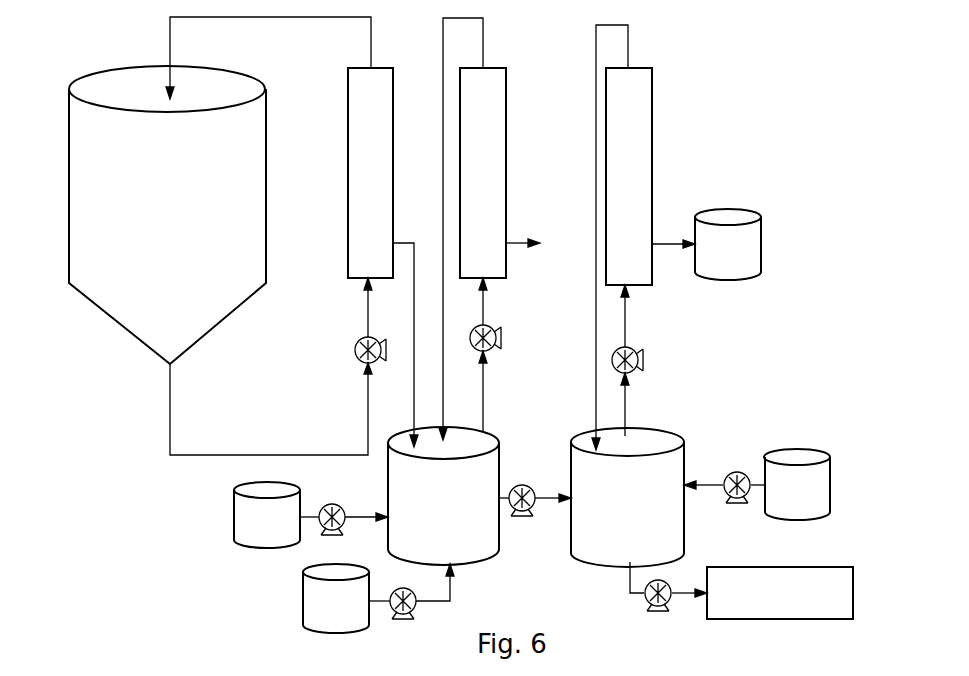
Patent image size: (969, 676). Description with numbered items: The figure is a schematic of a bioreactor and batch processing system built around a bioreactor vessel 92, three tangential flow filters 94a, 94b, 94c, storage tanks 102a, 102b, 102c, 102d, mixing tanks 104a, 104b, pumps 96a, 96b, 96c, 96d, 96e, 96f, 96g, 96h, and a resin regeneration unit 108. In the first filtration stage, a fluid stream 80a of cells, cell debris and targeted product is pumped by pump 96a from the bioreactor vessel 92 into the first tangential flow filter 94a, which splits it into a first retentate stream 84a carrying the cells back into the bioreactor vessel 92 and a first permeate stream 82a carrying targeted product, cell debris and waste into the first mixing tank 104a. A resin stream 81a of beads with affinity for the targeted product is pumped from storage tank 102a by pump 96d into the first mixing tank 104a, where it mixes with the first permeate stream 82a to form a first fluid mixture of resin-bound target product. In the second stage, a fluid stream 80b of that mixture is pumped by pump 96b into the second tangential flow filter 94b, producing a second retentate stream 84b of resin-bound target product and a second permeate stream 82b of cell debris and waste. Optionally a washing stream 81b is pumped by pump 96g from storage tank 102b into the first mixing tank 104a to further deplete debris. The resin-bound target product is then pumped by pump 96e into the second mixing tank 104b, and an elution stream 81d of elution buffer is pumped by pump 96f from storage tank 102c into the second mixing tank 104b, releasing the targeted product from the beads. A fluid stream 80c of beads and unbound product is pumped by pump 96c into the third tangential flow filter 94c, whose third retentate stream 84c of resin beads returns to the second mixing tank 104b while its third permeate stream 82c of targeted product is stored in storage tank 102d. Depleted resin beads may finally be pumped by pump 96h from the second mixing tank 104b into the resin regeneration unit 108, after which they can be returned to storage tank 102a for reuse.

The bioreactor vessel 92 is at (167, 215).
The first tangential flow filter 94a is at (370, 173).
The second tangential flow filter 94b is at (483, 173).
The third tangential flow filter 94c is at (629, 176).
The first retentate stream 84a is at (371, 40).
The second retentate stream 84b is at (483, 40).
The third retentate stream 84c is at (628, 40).
The fluid stream 80a is at (369, 312).
The fluid stream 80b is at (484, 310).
The fluid stream 80c is at (626, 320).
The first permeate stream 82a is at (416, 381).
The second permeate stream 82b is at (516, 242).
The third permeate stream 82c is at (664, 242).
The pump 96a is at (355, 350).
The pump 96b is at (502, 338).
The pump 96c is at (641, 360).
The pump 96d is at (336, 504).
The pump 96e is at (522, 478).
The pump 96f is at (737, 467).
The pump 96g is at (405, 587).
The pump 96h is at (652, 582).
The storage tank 102a is at (267, 515).
The storage tank 102b is at (336, 598).
The storage tank 102c is at (797, 484).
The storage tank 102d is at (728, 244).
The first mixing tank 104a is at (443, 496).
The second mixing tank 104b is at (627, 497).
The resin stream 81a is at (366, 511).
The washing stream 81b is at (436, 593).
The elution stream 81d is at (710, 478).
The resin regeneration unit 108 is at (780, 593).